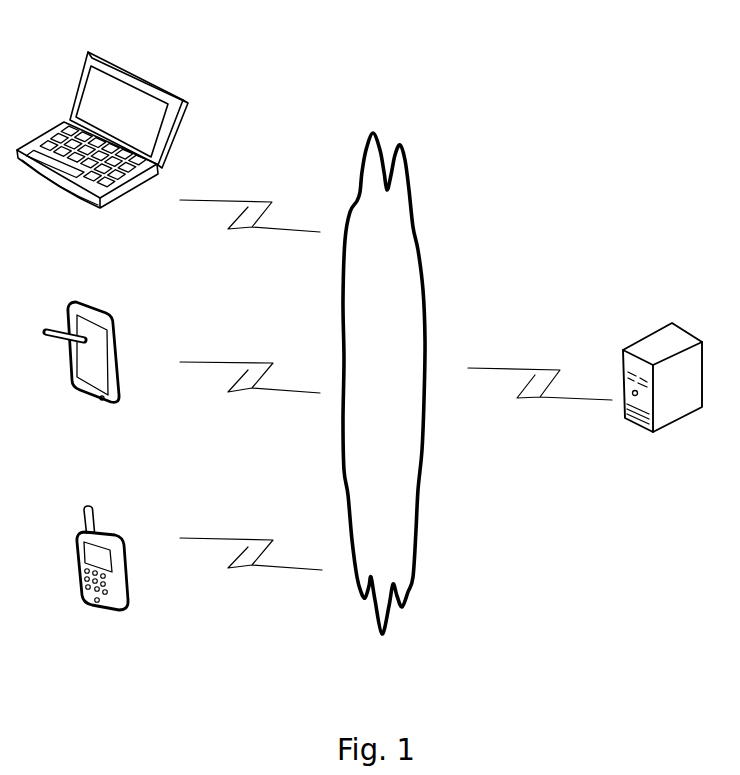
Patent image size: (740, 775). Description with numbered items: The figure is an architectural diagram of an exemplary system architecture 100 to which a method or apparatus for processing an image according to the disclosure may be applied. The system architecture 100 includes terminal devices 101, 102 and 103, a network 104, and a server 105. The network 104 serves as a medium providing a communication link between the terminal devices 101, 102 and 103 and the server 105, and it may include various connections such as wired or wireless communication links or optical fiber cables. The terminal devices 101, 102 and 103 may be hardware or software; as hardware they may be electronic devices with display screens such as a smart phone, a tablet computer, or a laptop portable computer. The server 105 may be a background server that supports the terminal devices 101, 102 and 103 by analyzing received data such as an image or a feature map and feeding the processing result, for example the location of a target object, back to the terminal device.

The system architecture 100 is at (636, 42).
The terminal device 101 is at (102, 580).
The terminal device 102 is at (82, 374).
The terminal device 103 is at (102, 149).
The network 104 is at (384, 383).
The server 105 is at (662, 394).